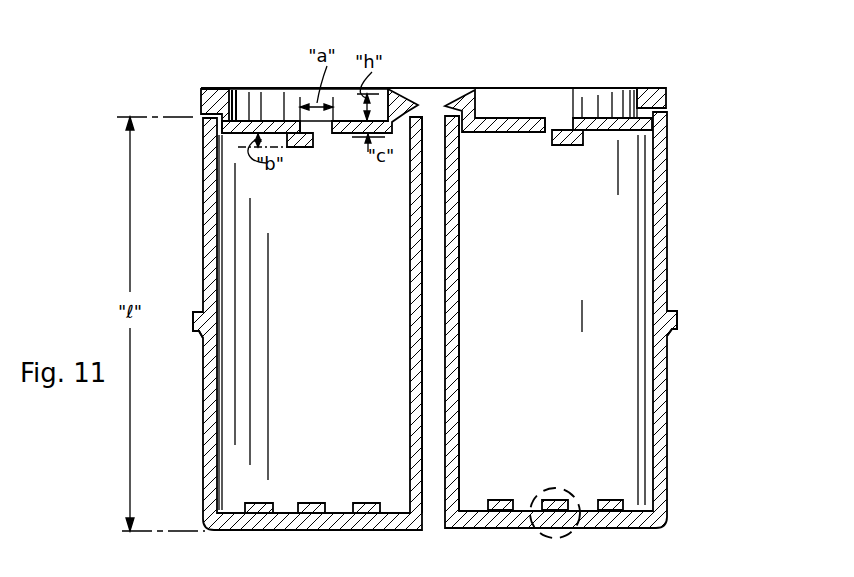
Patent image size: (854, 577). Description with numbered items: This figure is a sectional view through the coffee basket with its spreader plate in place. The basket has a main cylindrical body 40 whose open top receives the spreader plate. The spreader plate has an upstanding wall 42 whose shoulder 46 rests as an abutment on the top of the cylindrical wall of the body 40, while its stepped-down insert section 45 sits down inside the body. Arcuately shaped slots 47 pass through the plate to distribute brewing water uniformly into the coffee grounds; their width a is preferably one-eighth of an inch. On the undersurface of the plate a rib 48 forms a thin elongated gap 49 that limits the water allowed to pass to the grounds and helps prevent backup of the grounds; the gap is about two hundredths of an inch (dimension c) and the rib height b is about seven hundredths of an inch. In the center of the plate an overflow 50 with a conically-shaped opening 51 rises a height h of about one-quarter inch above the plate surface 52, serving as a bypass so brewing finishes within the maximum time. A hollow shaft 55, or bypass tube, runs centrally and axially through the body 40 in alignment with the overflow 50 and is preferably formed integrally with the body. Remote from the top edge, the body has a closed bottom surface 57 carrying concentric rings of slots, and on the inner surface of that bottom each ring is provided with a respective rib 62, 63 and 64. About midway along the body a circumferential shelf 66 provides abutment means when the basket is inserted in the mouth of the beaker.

The main cylindrical body 40 is at (658, 235).
The upstanding wall 42 is at (487, 87).
The insert section 45 is at (620, 129).
The shoulder 46 is at (203, 100).
The slots 47 is at (306, 126).
The rib 48 is at (306, 142).
The gap 49 is at (325, 130).
The overflow 50 is at (460, 100).
The conically-shaped opening 51 is at (412, 95).
The surface of the spreader plate 52 is at (236, 91).
The hollow shaft 55 is at (455, 298).
The closed bottom surface 57 is at (348, 503).
The rib 62 is at (375, 503).
The rib 63 is at (312, 503).
The rib 64 is at (258, 503).
The circumferential shelf 66 is at (196, 316).